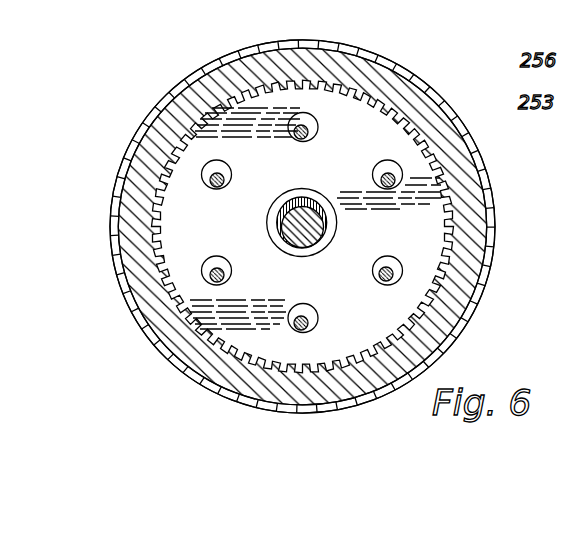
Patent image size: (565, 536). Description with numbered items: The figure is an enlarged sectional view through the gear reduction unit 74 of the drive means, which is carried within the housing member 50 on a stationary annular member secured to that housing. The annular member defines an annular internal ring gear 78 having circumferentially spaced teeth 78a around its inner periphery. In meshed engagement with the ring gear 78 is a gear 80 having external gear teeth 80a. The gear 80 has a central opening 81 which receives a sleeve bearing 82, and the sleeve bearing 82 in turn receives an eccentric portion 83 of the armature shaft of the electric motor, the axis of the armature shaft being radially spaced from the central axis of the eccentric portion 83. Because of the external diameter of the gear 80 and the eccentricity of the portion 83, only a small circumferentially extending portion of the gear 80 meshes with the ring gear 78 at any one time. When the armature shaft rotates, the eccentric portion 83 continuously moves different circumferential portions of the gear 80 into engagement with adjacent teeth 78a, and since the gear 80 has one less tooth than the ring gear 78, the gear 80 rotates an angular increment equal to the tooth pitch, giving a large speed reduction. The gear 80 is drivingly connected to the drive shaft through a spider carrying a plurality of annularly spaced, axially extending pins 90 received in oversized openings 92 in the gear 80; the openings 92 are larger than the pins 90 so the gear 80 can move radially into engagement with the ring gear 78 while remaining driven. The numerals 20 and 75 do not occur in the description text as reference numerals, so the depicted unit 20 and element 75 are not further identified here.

The planetary gear unit 20 is at (178, 80).
The housing member 50 is at (468, 316).
The gear reduction unit 74 is at (276, 366).
The shaft 75 is at (298, 233).
The annular internal ring gear 78 is at (196, 364).
The circumferentially spaced teeth 78a is at (158, 256).
The gear 80 is at (178, 193).
The external gear teeth 80a is at (175, 143).
The central opening 81 is at (293, 189).
The sleeve bearing 82 is at (337, 217).
The eccentric portion 83 is at (267, 216).
The pins 90 is at (307, 141).
The oversized openings 92 is at (306, 113).